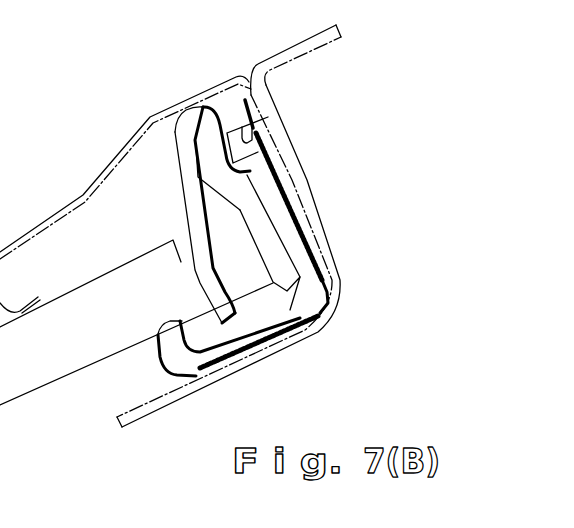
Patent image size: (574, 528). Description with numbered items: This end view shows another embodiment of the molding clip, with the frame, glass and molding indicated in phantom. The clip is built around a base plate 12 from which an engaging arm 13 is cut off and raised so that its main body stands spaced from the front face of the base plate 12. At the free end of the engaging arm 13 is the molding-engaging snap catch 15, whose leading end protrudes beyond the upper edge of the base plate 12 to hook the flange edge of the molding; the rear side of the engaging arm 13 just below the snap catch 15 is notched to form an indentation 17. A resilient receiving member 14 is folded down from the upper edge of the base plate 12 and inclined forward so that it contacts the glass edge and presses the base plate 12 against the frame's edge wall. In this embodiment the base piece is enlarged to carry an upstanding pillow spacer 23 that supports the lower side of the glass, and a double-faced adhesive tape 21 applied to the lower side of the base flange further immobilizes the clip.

The base plate 12 is at (325, 234).
The engaging arm 13 is at (260, 228).
The resilient receiving member 14 is at (188, 202).
The molding-engaging snap catch 15 is at (228, 120).
The indentation 17 is at (258, 152).
The double-faced adhesive tape 21 is at (302, 199).
The pillow spacer 23 is at (175, 352).